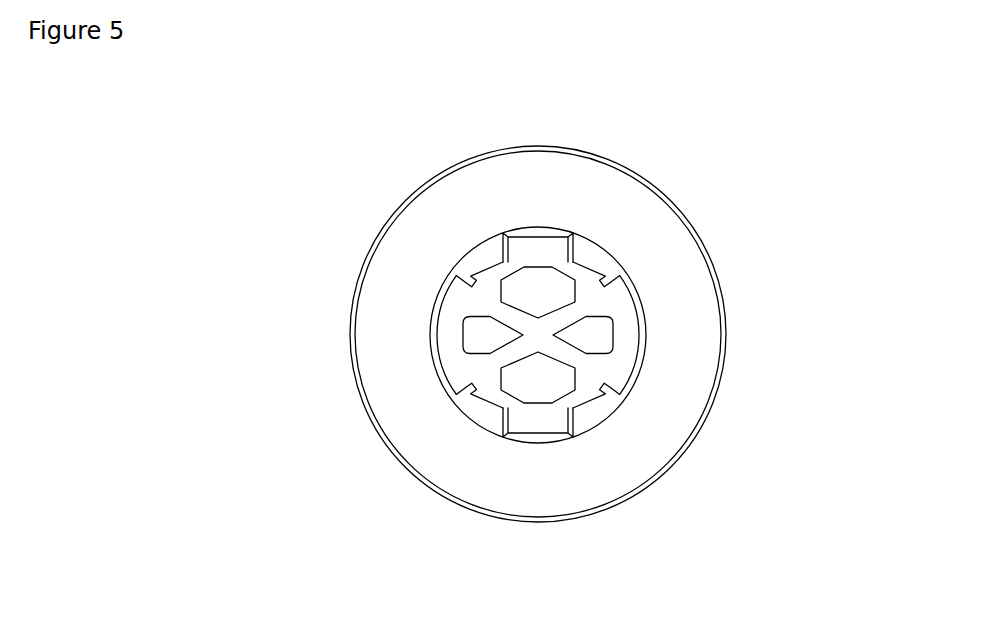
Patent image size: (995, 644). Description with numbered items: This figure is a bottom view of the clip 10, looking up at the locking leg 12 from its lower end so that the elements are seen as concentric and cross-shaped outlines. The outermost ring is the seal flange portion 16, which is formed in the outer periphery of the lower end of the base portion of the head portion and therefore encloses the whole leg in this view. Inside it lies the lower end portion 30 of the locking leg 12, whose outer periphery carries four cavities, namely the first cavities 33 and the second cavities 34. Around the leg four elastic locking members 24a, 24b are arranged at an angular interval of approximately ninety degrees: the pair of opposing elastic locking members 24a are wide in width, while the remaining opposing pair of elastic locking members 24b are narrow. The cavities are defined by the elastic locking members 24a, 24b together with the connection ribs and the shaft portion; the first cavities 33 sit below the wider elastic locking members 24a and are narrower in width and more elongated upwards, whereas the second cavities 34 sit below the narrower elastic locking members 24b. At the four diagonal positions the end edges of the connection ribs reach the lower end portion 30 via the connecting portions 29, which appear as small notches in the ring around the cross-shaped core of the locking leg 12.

The clip 10 is at (688, 131).
The locking leg 12 is at (660, 300).
The seal flange portion 16 is at (677, 254).
The elastic locking member 24a is at (452, 346).
The elastic locking member 24b is at (537, 243).
The connecting portion 29 is at (488, 291).
The lower end portion 30 is at (537, 337).
The first cavity 33 is at (544, 283).
The second cavity 34 is at (598, 332).